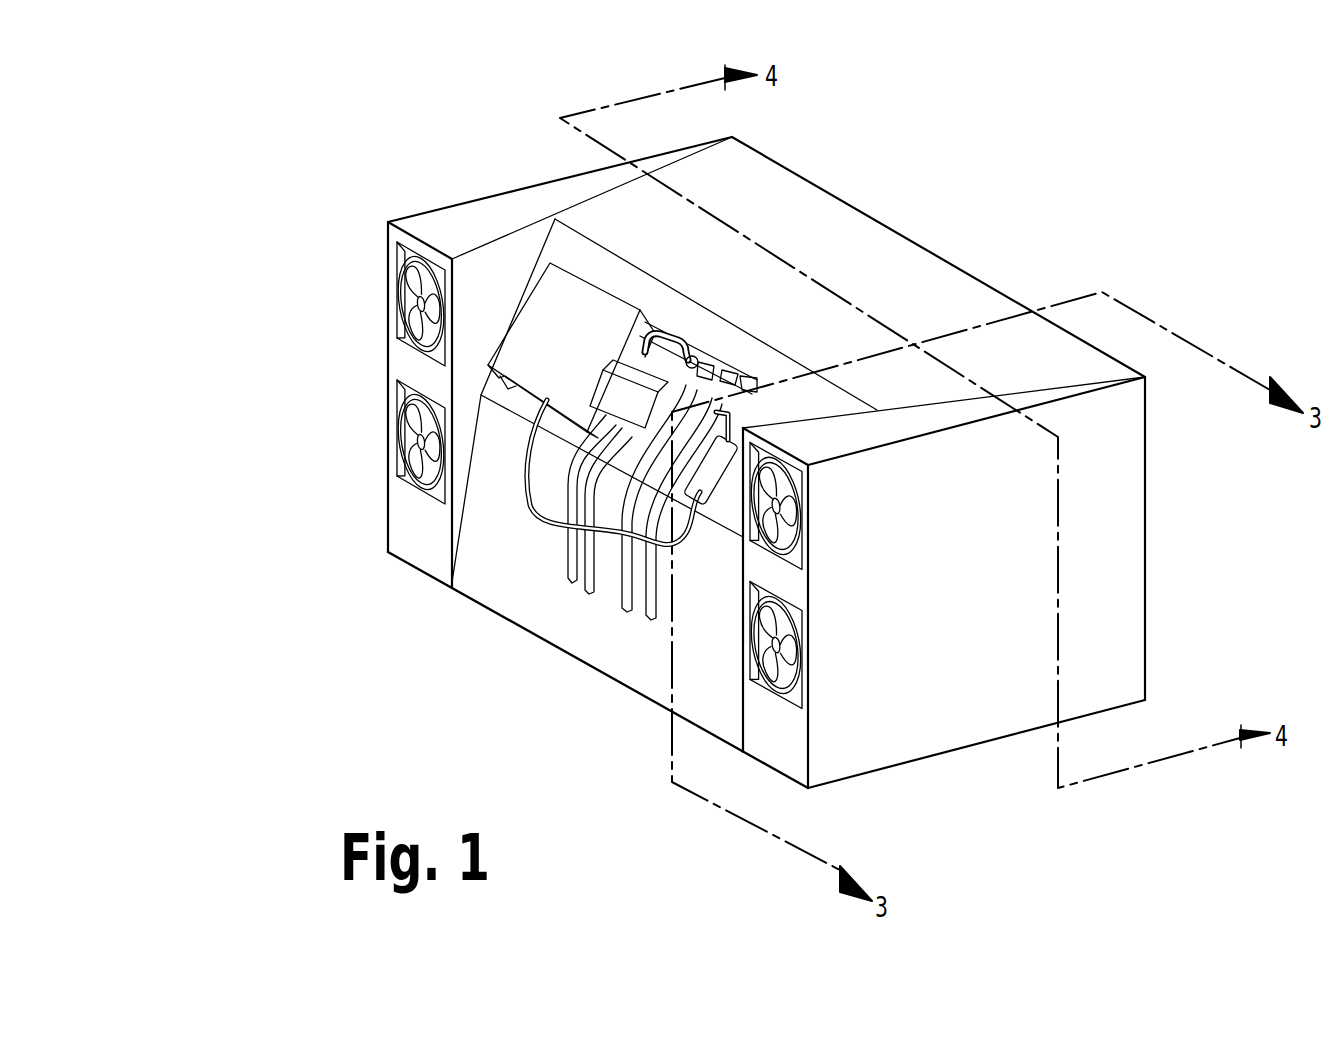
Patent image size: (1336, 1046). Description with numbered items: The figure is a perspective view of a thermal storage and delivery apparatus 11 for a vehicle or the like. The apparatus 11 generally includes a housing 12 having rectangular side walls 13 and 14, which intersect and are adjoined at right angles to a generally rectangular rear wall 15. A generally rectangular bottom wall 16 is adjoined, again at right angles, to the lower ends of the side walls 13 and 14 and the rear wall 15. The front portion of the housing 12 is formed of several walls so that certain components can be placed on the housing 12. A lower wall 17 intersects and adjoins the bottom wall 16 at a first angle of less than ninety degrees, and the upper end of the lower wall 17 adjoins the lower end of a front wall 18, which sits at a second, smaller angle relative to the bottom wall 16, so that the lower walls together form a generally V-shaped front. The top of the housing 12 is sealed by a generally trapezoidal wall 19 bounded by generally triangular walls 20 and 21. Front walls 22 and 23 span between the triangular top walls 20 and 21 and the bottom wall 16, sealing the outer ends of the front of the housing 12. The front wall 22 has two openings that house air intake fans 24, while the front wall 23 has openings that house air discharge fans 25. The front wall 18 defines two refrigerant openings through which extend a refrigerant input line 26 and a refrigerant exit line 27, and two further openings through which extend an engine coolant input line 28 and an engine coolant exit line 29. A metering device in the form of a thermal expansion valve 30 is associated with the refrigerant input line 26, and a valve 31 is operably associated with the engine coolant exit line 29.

The thermal storage and delivery apparatus 11 is at (298, 183).
The housing 12 is at (1147, 413).
The side wall 13 is at (1085, 477).
The side wall 14 is at (415, 203).
The rear wall 15 is at (1032, 292).
The bottom wall 16 is at (657, 742).
The lower wall 17 is at (508, 583).
The front wall 18 is at (597, 262).
The trapezoidal wall 19 is at (835, 232).
The triangular wall 20 is at (493, 212).
The triangular wall 21 is at (842, 440).
The front wall 22 is at (394, 530).
The front wall 23 is at (776, 743).
The air intake fans 24 is at (400, 318).
The air discharge fans 25 is at (790, 565).
The refrigerant input line 26 is at (692, 342).
The refrigerant exit line 27 is at (700, 357).
The engine coolant input line 28 is at (720, 373).
The engine coolant exit line 29 is at (740, 377).
The thermal expansion valve 30 is at (620, 385).
The valve 31 is at (724, 466).